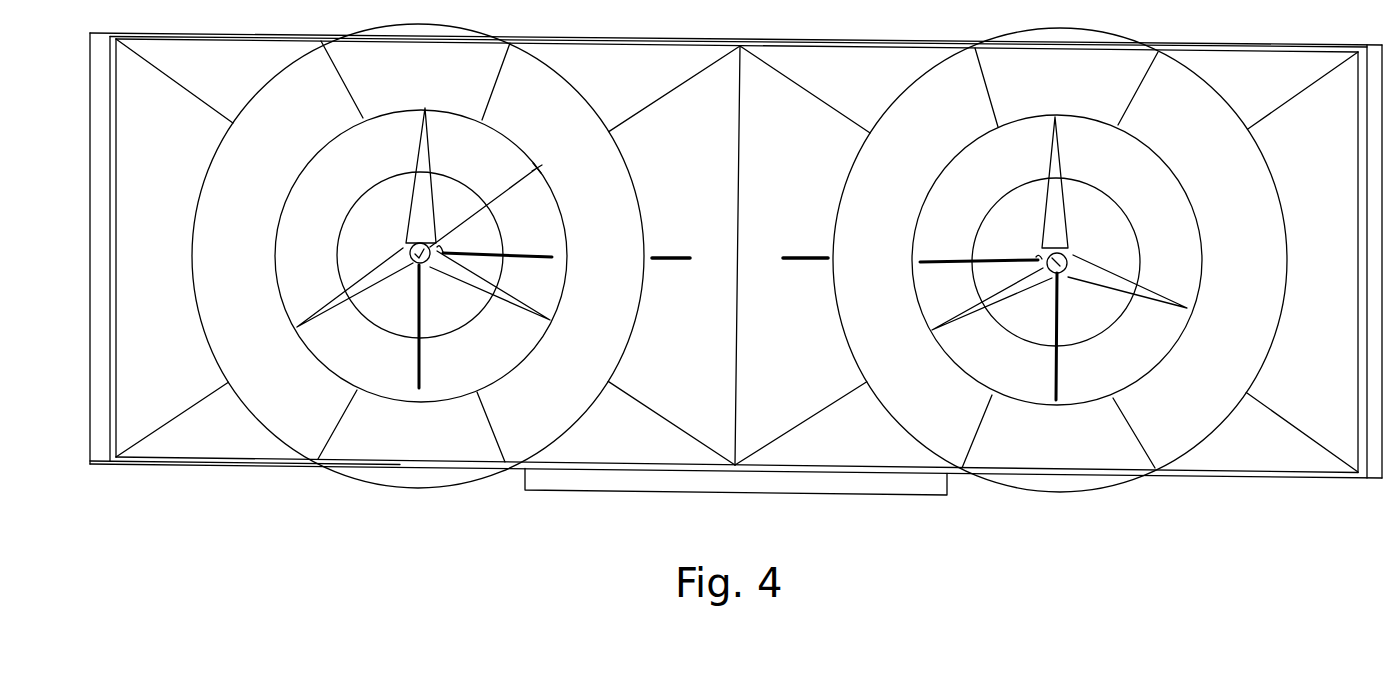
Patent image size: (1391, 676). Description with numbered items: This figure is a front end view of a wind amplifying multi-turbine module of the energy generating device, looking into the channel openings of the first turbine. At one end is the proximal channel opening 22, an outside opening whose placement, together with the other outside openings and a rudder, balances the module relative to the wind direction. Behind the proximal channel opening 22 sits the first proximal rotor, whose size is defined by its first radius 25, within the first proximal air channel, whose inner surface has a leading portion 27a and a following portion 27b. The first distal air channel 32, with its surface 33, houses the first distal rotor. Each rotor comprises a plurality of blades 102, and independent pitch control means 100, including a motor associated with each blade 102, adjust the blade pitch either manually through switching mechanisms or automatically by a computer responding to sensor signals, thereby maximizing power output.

The proximal channel opening 22 is at (523, 278).
The first radius 25 is at (478, 215).
The leading portion 27a is at (307, 430).
The following portion 27b is at (392, 370).
The first distal air channel 32 is at (218, 378).
The surface 33 is at (140, 407).
The independent pitch control means 100 is at (1070, 282).
The blades 102 is at (972, 307).